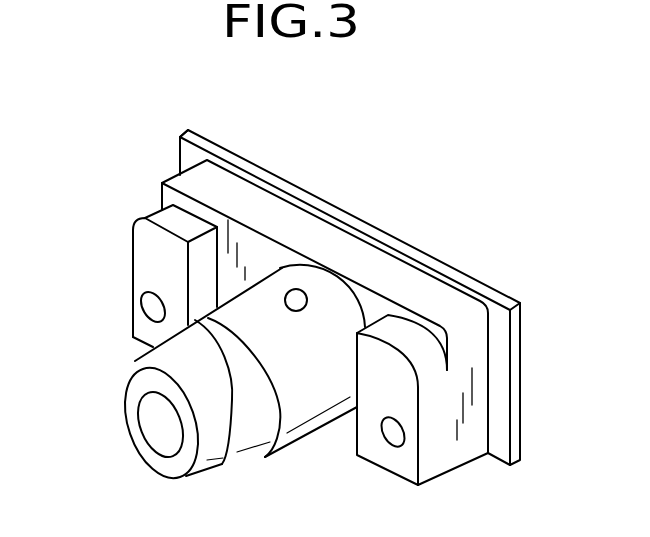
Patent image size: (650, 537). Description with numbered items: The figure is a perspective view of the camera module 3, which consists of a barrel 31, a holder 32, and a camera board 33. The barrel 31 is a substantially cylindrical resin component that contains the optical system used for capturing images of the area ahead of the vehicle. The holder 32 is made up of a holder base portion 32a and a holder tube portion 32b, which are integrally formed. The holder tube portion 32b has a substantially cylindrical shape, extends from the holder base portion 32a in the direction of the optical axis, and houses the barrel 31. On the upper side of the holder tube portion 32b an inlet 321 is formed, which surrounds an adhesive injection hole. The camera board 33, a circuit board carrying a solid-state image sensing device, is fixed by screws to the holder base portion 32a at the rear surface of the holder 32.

The camera module 3 is at (531, 205).
The barrel 31 is at (210, 348).
The holder 32 is at (145, 220).
The holder base portion 32a is at (403, 277).
The holder tube portion 32b is at (312, 383).
The inlet 321 is at (297, 289).
The camera board 33 is at (205, 142).